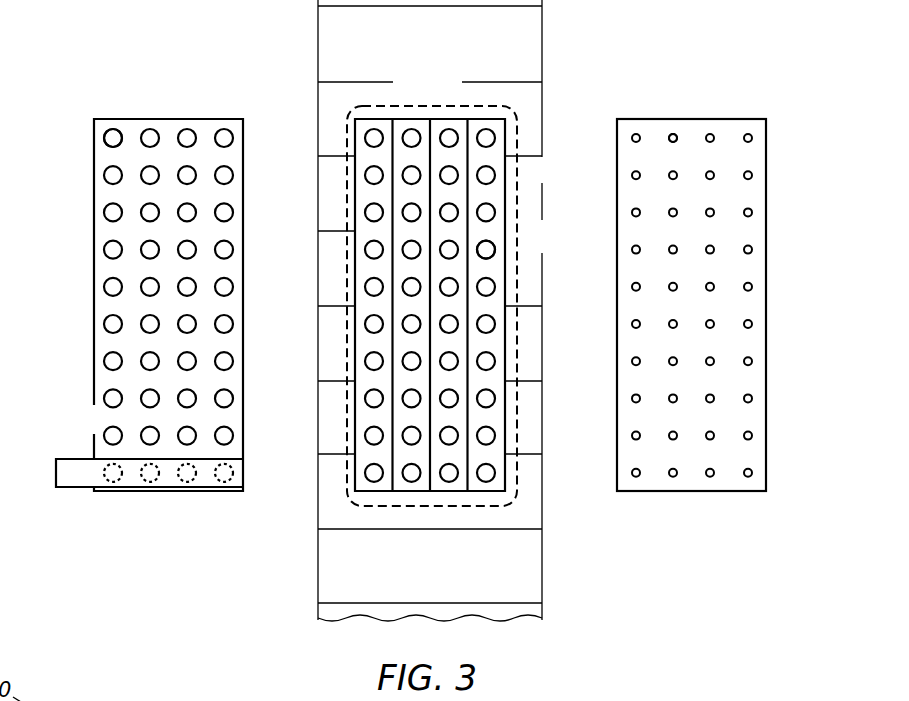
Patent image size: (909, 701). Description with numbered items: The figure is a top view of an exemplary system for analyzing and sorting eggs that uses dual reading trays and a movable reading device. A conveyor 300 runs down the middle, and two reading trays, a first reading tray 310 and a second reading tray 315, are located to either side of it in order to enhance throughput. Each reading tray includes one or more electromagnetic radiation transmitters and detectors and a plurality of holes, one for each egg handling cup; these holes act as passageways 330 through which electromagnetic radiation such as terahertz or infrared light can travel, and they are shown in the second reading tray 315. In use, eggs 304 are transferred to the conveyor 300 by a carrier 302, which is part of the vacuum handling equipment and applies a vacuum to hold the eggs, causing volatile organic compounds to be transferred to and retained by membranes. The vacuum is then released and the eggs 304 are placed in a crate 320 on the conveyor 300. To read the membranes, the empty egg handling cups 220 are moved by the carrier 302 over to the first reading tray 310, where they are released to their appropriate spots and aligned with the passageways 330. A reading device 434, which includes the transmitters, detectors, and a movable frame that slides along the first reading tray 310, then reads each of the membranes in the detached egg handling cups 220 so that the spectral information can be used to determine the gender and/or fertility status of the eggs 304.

The conveyor 300 is at (376, 37).
The first reading tray 310 is at (207, 121).
The egg handling cups 220 is at (113, 129).
The reading device 434 is at (73, 458).
The crate 320 is at (435, 118).
The carrier 302 is at (517, 186).
The eggs 304 is at (495, 248).
The second reading tray 315 is at (728, 119).
The passageways 330 is at (672, 133).